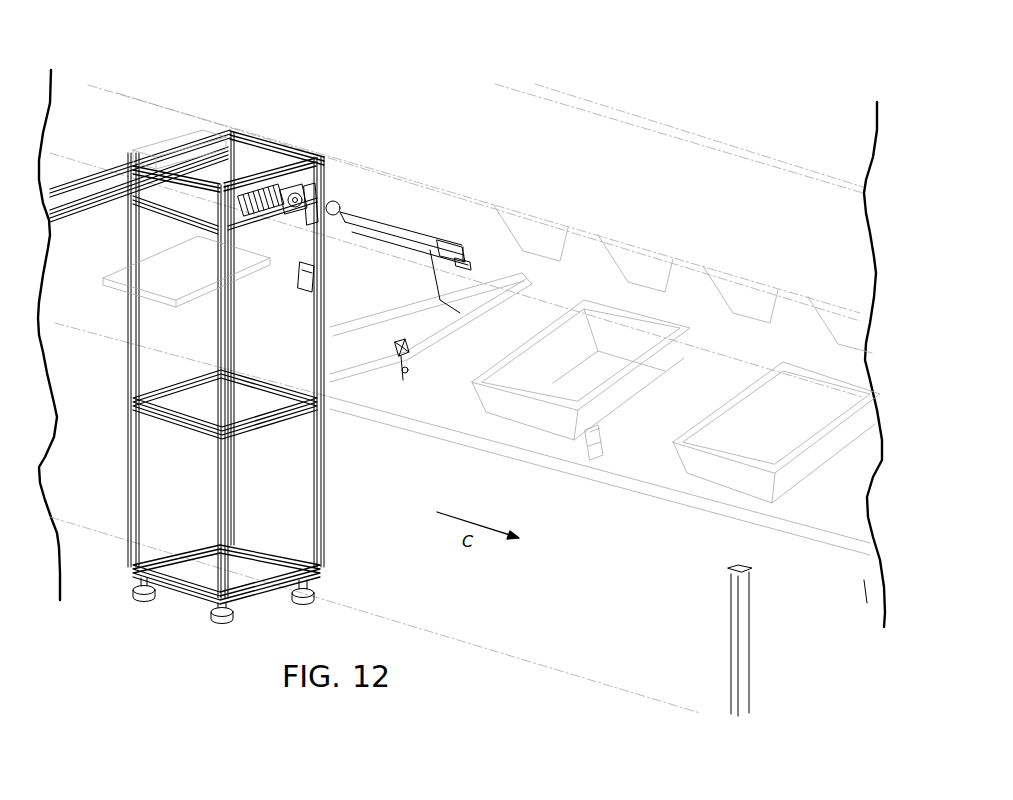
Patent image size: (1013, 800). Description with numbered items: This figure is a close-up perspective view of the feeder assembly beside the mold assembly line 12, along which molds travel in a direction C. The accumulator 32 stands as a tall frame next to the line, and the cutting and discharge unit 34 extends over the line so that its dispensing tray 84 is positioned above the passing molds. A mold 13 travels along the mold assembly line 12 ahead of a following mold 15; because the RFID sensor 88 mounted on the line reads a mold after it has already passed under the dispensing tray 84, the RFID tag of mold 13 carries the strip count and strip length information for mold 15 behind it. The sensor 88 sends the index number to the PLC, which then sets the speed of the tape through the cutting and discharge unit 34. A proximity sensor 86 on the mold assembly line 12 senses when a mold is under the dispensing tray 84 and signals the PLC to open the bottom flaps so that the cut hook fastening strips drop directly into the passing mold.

The mold assembly line 12 is at (760, 263).
The mold 13 is at (623, 332).
The mold 15 is at (286, 278).
The accumulator 32 is at (326, 470).
The cutting and discharge unit 34 is at (377, 228).
The dispensing tray 84 is at (433, 243).
The proximity sensor 86 is at (398, 374).
The sensor 88 is at (590, 449).